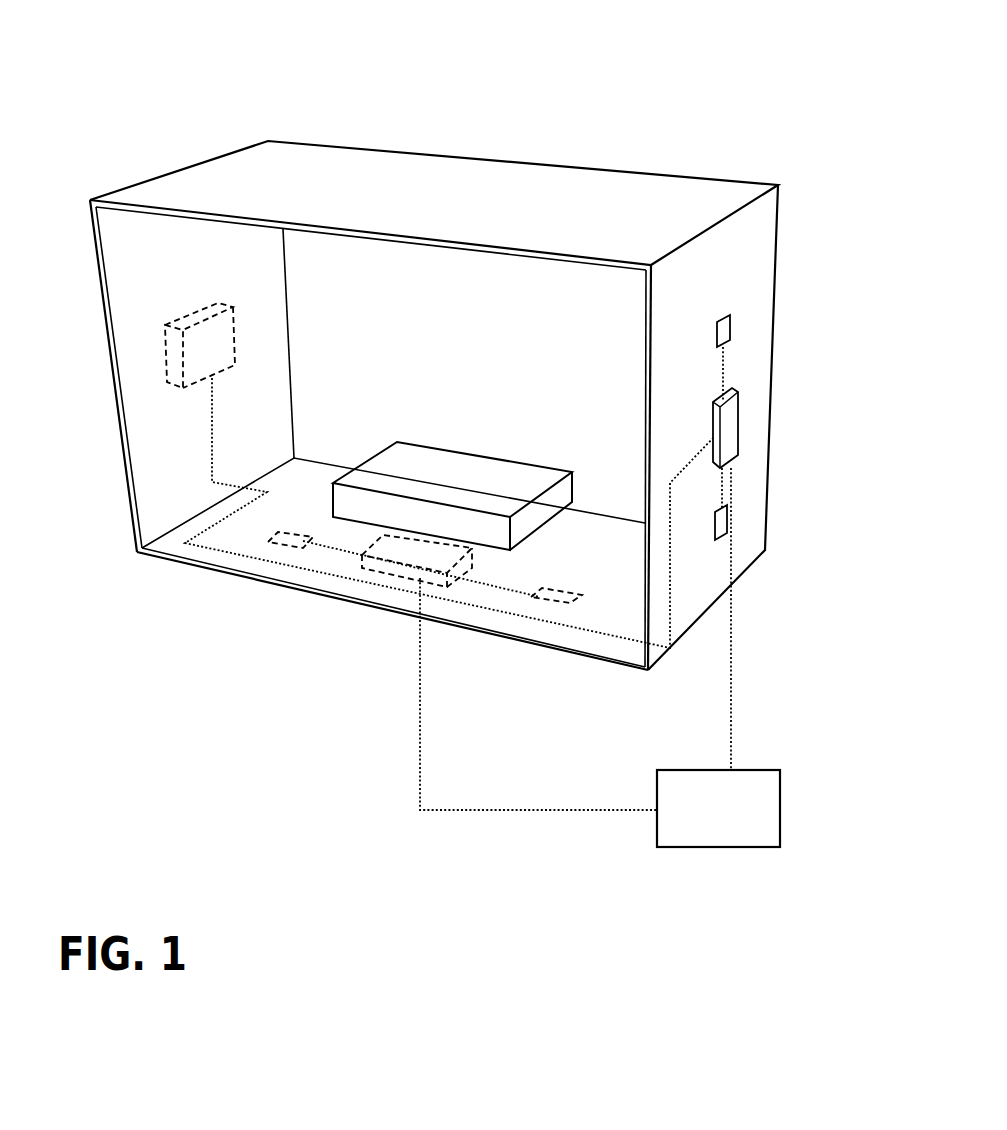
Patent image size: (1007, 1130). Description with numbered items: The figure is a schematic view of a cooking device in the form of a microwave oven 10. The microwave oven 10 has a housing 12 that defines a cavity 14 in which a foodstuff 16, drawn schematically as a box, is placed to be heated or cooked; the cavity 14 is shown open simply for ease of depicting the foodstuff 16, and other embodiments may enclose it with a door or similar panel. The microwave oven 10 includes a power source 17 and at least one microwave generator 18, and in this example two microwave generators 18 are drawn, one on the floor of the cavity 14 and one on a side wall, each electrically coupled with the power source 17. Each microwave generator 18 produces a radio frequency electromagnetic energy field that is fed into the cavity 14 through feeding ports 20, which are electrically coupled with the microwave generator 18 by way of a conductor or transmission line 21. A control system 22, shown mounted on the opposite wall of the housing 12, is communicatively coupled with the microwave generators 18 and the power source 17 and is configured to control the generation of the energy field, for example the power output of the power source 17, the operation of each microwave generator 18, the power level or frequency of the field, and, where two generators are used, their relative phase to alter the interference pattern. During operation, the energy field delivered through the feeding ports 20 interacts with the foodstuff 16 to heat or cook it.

The microwave oven 10 is at (717, 118).
The housing 12 is at (602, 197).
The cavity 14 is at (392, 352).
The foodstuff 16 is at (543, 460).
The power source 17 is at (707, 847).
The microwave generator 18 is at (397, 572).
The feeding port 20 is at (287, 545).
The transmission line 21 is at (340, 548).
The control system 22 is at (177, 360).